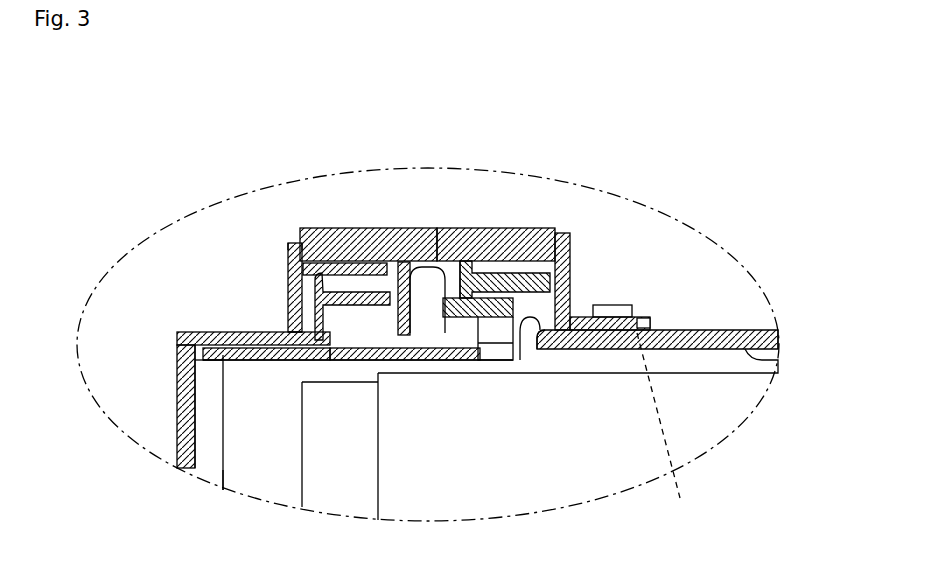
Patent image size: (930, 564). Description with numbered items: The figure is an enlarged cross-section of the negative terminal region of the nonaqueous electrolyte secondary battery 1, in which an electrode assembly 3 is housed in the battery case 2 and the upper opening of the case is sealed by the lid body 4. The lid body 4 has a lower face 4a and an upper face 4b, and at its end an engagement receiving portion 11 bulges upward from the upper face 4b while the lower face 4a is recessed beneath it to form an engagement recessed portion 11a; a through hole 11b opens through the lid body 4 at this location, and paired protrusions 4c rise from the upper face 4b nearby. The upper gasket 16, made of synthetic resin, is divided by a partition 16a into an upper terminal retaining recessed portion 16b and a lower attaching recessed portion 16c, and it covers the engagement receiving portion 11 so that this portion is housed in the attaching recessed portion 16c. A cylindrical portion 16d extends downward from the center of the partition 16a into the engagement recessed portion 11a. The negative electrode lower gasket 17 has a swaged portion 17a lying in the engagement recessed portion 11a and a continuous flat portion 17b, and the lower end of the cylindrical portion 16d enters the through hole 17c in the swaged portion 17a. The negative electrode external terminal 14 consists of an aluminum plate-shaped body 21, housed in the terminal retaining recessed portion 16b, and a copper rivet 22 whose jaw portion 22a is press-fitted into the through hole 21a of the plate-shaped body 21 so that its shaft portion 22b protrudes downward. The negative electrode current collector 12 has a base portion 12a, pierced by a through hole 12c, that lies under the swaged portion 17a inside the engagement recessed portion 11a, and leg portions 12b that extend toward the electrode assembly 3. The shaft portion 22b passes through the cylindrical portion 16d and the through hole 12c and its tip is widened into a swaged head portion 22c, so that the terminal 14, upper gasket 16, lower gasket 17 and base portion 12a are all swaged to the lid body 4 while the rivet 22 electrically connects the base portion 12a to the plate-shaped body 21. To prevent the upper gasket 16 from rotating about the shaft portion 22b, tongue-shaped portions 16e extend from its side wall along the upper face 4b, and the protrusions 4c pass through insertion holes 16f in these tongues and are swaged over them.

The nonaqueous electrolyte secondary battery 1 is at (734, 186).
The battery case 2 is at (182, 452).
The electrode assembly 3 is at (460, 505).
The lid body 4 is at (740, 320).
The lower face 4a is at (770, 361).
The upper face 4b is at (777, 330).
The protrusion 4c is at (614, 306).
The engagement receiving portion 11 is at (293, 322).
The engagement recessed portion 11a is at (297, 330).
The through hole 11b is at (362, 268).
The negative electrode current collector 12 is at (219, 472).
The base portion 12a is at (280, 362).
The leg portion 12b is at (241, 482).
The through hole 12c is at (407, 360).
The negative electrode external terminal 14 is at (518, 226).
The upper gasket 16 is at (568, 233).
The partition 16a is at (372, 262).
The terminal retaining recessed portion 16b is at (540, 262).
The attaching recessed portion 16c is at (538, 350).
The cylindrical portion 16d is at (297, 315).
The tongue-shaped portion 16e is at (650, 328).
The insertion hole 16f is at (681, 498).
The negative electrode lower gasket 17 is at (203, 372).
The swaged portion 17a is at (539, 352).
The flat portion 17b is at (208, 333).
The through hole 17c is at (450, 360).
The plate-shaped body 21 is at (489, 236).
The through hole 21a is at (425, 270).
The rivet 22 is at (426, 238).
The jaw portion 22a is at (443, 235).
The shaft portion 22b is at (572, 262).
The swaged head portion 22c is at (487, 330).